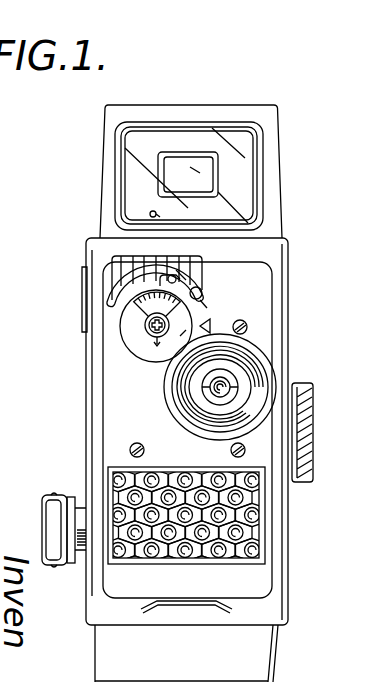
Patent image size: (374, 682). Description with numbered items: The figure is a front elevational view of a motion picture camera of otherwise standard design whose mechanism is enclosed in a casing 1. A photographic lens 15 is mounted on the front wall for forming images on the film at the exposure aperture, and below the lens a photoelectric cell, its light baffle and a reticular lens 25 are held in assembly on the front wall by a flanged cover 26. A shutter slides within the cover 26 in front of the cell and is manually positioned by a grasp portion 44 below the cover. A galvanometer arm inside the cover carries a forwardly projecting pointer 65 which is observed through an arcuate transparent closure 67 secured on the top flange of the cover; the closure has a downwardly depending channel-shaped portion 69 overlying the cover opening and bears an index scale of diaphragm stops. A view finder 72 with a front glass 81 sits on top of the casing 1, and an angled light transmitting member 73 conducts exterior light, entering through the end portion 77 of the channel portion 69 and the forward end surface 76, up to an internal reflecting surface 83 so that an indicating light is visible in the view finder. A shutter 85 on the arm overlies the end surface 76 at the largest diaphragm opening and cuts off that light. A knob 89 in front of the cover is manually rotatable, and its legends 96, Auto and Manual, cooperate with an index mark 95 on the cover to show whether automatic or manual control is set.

The casing 1 is at (282, 258).
The photographic lens 15 is at (215, 389).
The reticular lens 25 is at (266, 525).
The flanged cover 26 is at (110, 398).
The grasp portion 44 is at (158, 607).
The pointer 65 is at (188, 282).
The closure 67 is at (112, 262).
The downwardly depending portion 69 is at (113, 296).
The view finder 72 is at (268, 166).
The light transmitting member 73 is at (163, 218).
The forward end surface 76 is at (205, 292).
The end portion 77 is at (207, 307).
The front glass 81 is at (237, 190).
The internal reflecting surface 83 is at (151, 211).
The shutter 85 is at (182, 280).
The knob 89 is at (128, 330).
The index mark 95 is at (205, 325).
The legends 96 is at (143, 356).